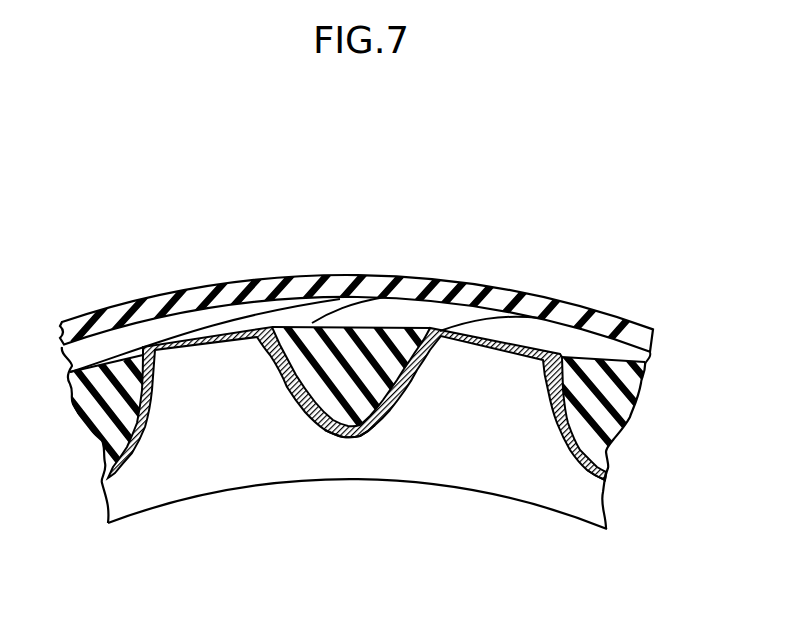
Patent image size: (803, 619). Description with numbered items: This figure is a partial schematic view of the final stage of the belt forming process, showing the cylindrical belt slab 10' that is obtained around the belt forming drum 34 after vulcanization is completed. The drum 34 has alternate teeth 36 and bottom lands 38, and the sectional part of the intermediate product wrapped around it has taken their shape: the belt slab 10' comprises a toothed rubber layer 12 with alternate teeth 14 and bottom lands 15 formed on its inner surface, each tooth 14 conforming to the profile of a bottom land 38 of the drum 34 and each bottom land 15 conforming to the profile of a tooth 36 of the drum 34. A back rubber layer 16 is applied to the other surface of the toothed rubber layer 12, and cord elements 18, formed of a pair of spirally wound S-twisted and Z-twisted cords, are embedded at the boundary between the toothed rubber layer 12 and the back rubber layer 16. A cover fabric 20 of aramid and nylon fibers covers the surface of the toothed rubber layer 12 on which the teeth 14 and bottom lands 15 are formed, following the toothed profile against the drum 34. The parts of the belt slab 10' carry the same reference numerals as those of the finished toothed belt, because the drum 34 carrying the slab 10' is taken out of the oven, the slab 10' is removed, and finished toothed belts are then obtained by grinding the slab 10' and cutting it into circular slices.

The belt slab 10' is at (403, 376).
The toothed rubber layer 12 is at (403, 441).
The teeth 14 is at (128, 480).
The bottom lands 15 is at (392, 429).
The back rubber layer 16 is at (441, 288).
The cord elements 18 is at (644, 364).
The cover fabric 20 is at (592, 474).
The belt forming drum 34 is at (498, 498).
The teeth of belt forming drum 36 is at (236, 364).
The bottom lands of belt forming drum 38 is at (367, 438).